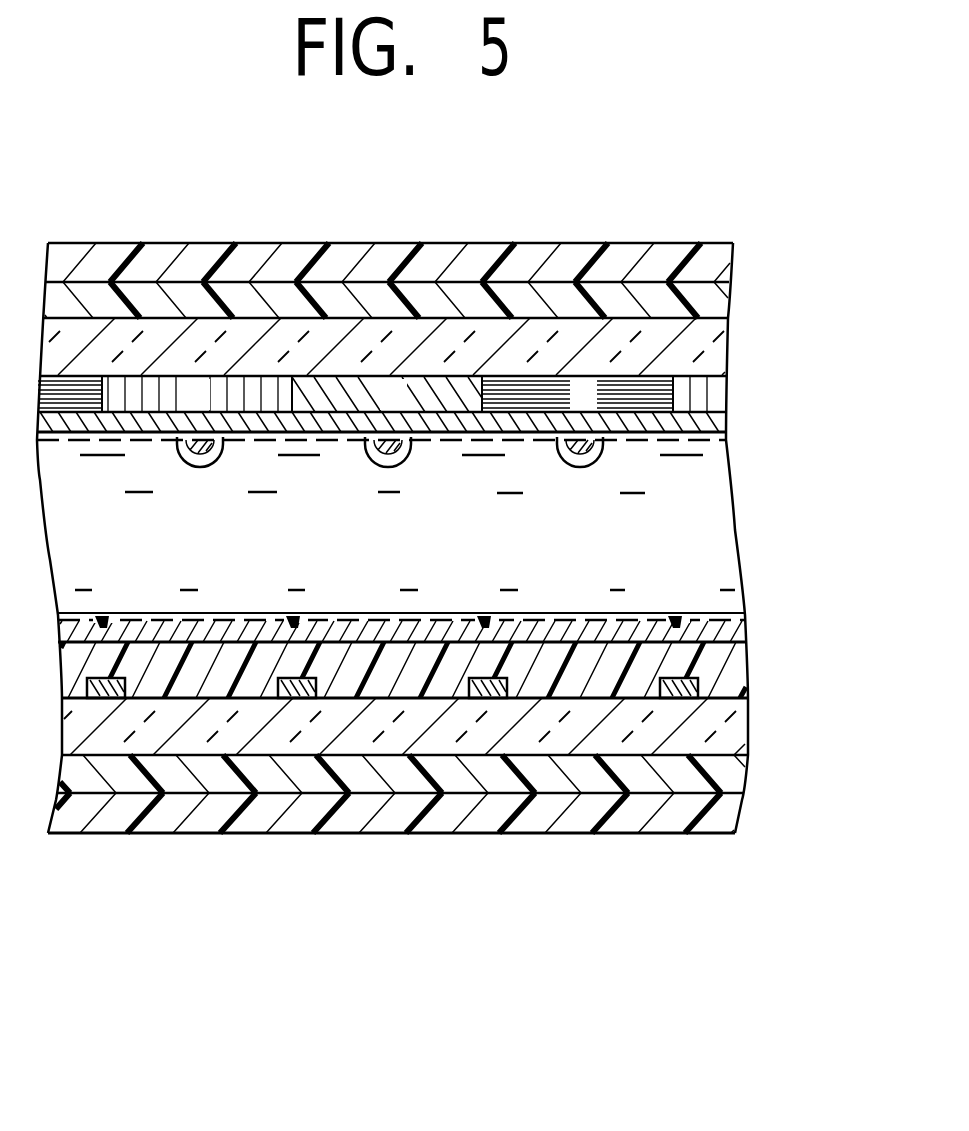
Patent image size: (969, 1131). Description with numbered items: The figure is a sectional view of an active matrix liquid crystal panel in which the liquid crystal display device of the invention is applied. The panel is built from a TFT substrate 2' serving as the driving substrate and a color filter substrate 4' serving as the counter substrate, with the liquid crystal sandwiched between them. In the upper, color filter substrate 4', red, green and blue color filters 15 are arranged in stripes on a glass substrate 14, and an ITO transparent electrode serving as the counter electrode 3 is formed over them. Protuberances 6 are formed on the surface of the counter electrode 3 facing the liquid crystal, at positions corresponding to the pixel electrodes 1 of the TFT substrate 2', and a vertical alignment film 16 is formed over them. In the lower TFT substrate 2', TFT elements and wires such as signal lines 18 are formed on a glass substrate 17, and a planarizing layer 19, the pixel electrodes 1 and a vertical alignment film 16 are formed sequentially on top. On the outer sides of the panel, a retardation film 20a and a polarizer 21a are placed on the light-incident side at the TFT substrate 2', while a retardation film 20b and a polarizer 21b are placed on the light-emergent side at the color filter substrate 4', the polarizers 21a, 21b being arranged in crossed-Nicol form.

The polarizer 21b is at (705, 265).
The retardation film 20b is at (705, 307).
The glass substrate 14 is at (688, 375).
The color filters 15 is at (688, 408).
The counter electrode 3 is at (422, 428).
The color filter substrate 4' is at (462, 384).
The vertical alignment film 16 is at (652, 438).
The protuberances 6 is at (572, 463).
The pixel electrodes 1 is at (737, 629).
The planarizing layer 19 is at (720, 676).
The signal lines 18 is at (690, 728).
The glass substrate 17 is at (437, 784).
The TFT substrate 2' is at (472, 714).
The retardation film 20a is at (694, 812).
The polarizer 21a is at (652, 820).